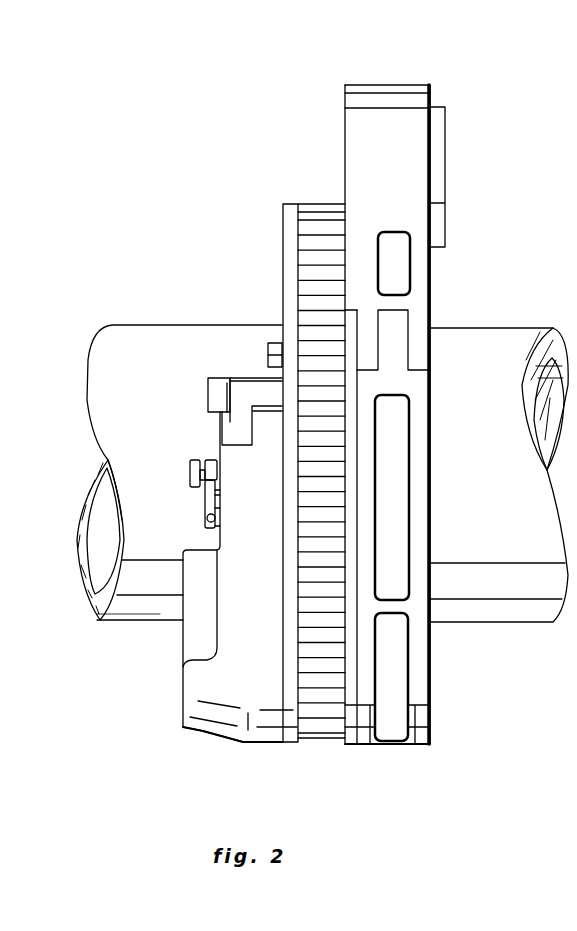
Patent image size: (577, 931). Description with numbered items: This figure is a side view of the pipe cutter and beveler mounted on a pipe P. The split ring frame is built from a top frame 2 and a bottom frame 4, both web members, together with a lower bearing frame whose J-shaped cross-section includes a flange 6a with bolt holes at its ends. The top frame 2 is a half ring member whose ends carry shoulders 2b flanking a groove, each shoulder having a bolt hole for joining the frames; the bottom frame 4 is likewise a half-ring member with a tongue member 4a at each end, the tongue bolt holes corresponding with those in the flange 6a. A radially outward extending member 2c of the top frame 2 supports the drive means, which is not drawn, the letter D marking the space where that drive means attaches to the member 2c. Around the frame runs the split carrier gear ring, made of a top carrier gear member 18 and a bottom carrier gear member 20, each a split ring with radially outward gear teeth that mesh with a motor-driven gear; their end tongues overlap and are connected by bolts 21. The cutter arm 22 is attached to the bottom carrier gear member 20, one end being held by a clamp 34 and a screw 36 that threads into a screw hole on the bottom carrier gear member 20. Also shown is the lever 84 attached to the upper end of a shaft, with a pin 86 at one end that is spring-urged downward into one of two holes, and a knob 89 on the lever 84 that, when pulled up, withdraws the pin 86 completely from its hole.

The pipe P is at (141, 334).
The top frame 2 is at (384, 96).
The radially outward extending member 2c is at (352, 122).
The drive means space D is at (446, 128).
The shoulders 2b is at (367, 340).
The tongue member 4a is at (394, 360).
The bottom frame 4 is at (363, 733).
The flange 6a is at (347, 683).
The top carrier gear member 18 is at (293, 222).
The bottom carrier gear member 20 is at (290, 737).
The bolts 21 is at (268, 350).
The screw 36 is at (207, 395).
The clamp 34 is at (238, 414).
The knob 89 is at (197, 473).
The pin 86 is at (200, 483).
The lever 84 is at (208, 500).
The cutter arm 22 is at (200, 735).